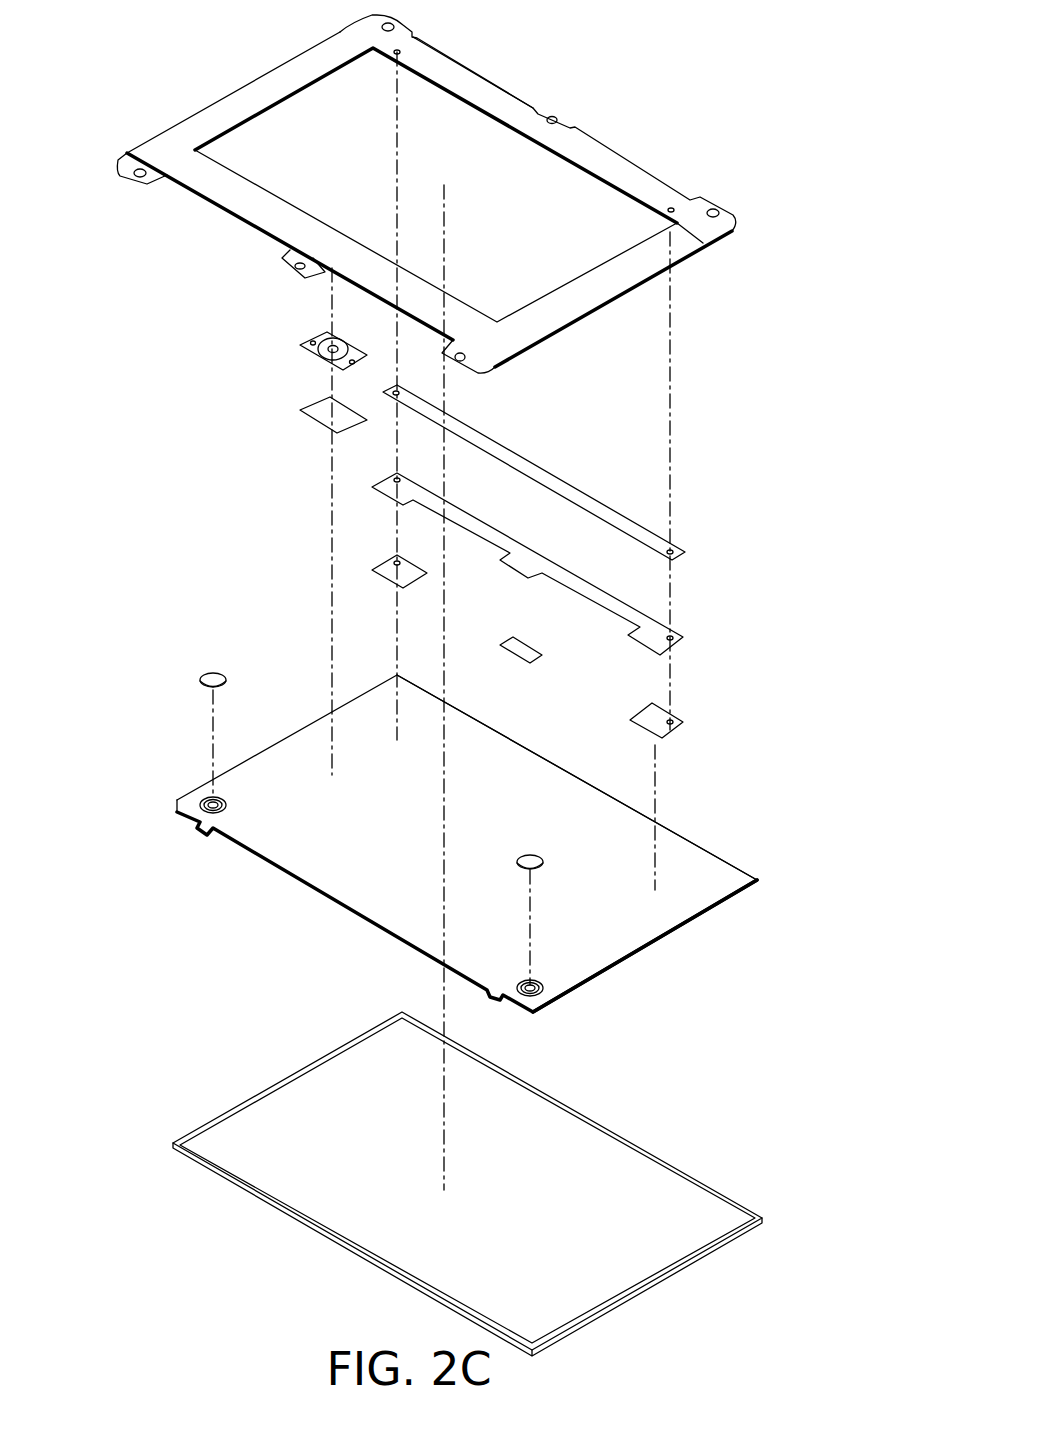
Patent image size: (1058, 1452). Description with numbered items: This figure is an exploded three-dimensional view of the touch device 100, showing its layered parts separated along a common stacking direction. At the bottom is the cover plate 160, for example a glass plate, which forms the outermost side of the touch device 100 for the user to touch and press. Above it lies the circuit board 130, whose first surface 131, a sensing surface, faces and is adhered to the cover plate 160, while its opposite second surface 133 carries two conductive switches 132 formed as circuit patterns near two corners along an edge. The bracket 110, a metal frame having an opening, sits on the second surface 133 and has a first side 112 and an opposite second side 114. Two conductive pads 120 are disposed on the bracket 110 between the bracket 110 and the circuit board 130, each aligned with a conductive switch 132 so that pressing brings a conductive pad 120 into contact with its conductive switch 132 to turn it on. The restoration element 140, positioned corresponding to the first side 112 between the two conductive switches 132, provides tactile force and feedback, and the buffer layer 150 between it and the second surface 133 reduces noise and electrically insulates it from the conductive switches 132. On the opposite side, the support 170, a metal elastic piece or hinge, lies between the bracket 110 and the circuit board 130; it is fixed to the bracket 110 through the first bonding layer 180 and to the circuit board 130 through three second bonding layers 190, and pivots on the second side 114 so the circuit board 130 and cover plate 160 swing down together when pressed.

The touch device 100 is at (712, 1322).
The bracket 110 is at (627, 173).
The first side 112 is at (275, 217).
The second side 114 is at (497, 104).
The conductive pad 120 is at (207, 670).
The circuit board 130 is at (632, 925).
The first surface 131 is at (737, 897).
The conductive switch 132 is at (205, 798).
The second surface 133 is at (695, 876).
The restoration element 140 is at (310, 338).
The buffer layer 150 is at (318, 406).
The cover plate 160 is at (643, 1180).
The support 170 is at (655, 632).
The first bonding layer 180 is at (655, 538).
The second bonding layer 190 is at (388, 573).